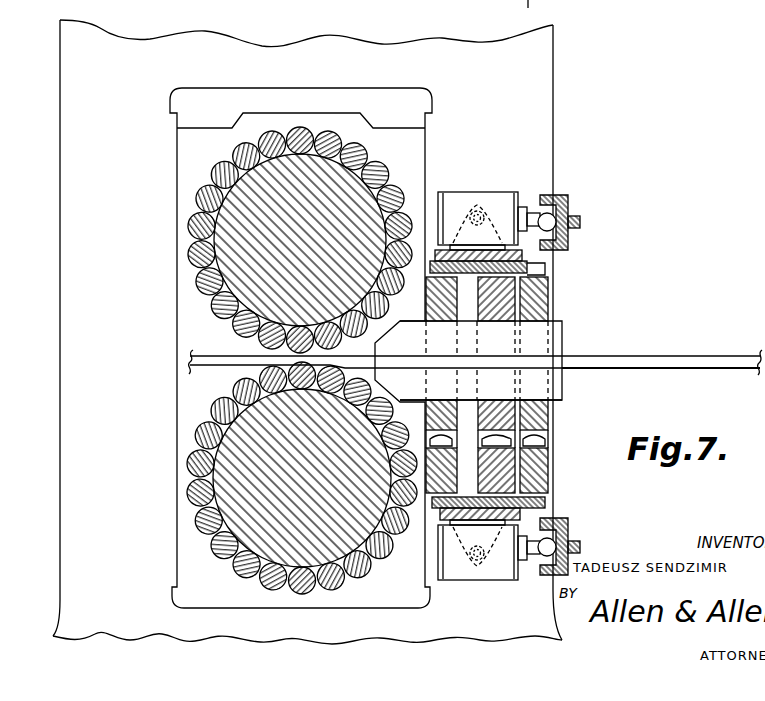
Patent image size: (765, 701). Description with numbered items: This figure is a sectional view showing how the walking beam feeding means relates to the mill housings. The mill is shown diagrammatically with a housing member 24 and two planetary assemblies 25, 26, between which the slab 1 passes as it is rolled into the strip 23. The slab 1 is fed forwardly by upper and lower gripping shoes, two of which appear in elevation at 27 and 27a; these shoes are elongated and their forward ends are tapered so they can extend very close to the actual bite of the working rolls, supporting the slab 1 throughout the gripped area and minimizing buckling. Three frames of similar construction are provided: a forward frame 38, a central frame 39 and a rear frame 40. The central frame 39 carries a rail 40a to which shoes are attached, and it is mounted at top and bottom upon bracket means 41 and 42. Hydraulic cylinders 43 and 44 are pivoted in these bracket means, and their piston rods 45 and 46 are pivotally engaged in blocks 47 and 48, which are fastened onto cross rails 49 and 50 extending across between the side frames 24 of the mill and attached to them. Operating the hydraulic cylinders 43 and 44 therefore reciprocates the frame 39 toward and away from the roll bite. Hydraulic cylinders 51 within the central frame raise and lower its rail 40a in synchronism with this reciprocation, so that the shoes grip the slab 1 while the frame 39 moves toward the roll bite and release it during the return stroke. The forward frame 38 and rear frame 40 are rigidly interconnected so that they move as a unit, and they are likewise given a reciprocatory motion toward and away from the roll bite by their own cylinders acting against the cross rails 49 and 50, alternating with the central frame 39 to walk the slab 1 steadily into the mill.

The slab 1 is at (712, 356).
The strip 23 is at (205, 356).
The housing member 24 is at (301, 347).
The planetary assembly 25 is at (300, 240).
The planetary assembly 26 is at (301, 478).
The gripping shoe 27 is at (563, 330).
The gripping shoe 27a is at (565, 388).
The forward frame 38 is at (447, 319).
The central frame 39 is at (498, 318).
The rear frame 40 is at (532, 318).
The rail 40a is at (490, 408).
The bracket means 41 is at (567, 259).
The bracket means 42 is at (548, 512).
The hydraulic cylinder 43 is at (466, 192).
The hydraulic cylinder 44 is at (462, 581).
The piston rod 45 is at (543, 195).
The piston rod 46 is at (532, 578).
The block 47 is at (568, 203).
The block 48 is at (566, 531).
The cross rail 49 is at (580, 230).
The cross rail 50 is at (582, 541).
The hydraulic cylinder 51 is at (548, 452).